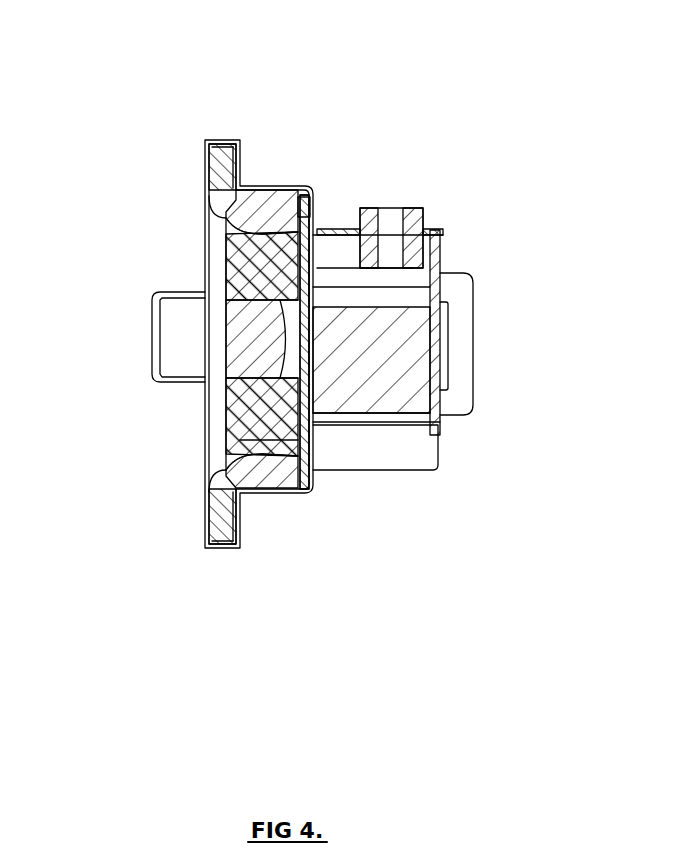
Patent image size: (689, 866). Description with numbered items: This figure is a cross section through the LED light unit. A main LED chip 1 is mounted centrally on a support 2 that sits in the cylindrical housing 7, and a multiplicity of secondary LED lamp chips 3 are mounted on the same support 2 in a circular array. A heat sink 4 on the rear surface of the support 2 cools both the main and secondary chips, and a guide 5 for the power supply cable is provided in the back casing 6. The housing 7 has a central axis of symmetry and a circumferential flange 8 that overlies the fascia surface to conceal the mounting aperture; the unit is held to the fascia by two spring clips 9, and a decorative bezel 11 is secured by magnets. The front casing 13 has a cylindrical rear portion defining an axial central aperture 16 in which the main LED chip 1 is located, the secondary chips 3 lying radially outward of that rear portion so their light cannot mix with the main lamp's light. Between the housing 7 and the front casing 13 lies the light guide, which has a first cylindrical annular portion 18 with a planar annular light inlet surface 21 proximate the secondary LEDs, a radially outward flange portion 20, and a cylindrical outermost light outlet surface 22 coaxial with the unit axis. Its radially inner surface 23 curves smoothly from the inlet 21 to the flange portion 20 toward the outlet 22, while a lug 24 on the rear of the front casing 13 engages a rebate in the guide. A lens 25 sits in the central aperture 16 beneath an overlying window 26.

The main LED chip 1 is at (268, 256).
The support 2 is at (310, 355).
The secondary LED lamp chips 3 is at (313, 200).
The heat sink 4 is at (407, 405).
The guide 5 is at (390, 222).
The back casing 6 is at (443, 250).
The housing 7 is at (322, 207).
The circumferential flange 8 is at (230, 163).
The spring clips 9 is at (152, 360).
The decorative bezel 11 is at (209, 155).
The front casing 13 is at (232, 212).
The central aperture 16 is at (245, 235).
The first generally cylindrical annular portion 18 is at (268, 205).
The flange portion 20 is at (212, 140).
The light inlet surface 21 is at (300, 205).
The light outlet surface 22 is at (225, 140).
The radially inner surface 23 is at (222, 182).
The lug 24 is at (295, 200).
The lens 25 is at (262, 285).
The outer surface 26 is at (233, 392).